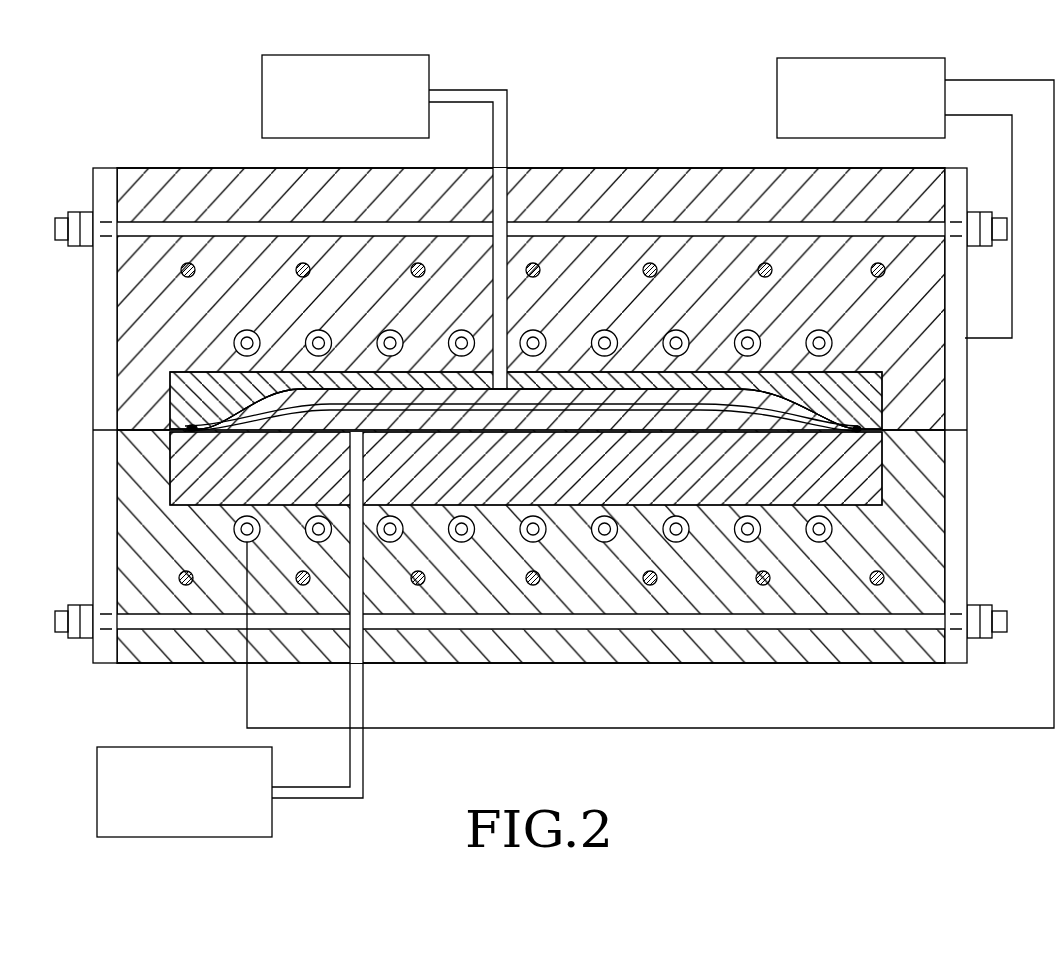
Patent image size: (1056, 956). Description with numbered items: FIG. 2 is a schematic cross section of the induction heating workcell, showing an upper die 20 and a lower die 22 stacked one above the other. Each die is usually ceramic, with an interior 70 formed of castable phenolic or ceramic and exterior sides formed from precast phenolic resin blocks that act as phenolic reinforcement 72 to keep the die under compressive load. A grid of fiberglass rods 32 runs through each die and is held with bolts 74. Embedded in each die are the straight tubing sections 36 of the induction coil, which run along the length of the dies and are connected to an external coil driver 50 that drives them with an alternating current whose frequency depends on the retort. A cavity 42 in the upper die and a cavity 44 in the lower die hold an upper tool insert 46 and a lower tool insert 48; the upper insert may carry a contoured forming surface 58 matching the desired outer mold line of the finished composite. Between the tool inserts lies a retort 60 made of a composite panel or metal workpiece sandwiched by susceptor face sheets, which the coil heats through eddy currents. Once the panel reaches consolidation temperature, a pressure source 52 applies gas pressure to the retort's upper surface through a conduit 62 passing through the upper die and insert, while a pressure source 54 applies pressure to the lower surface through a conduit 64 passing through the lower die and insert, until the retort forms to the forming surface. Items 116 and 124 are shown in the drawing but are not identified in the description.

The upper die 20 is at (608, 152).
The lower die 22 is at (855, 680).
The fiberglass rods 32 is at (163, 215).
The straight tubing section 36 is at (247, 330).
The cavity 42 is at (883, 383).
The cavity 44 is at (883, 458).
The upper tool insert 46 is at (190, 387).
The lower tool insert 48 is at (183, 484).
The coil driver 50 is at (777, 98).
The pressure source 52 is at (262, 96).
The pressure source 54 is at (97, 789).
The contoured forming surface 58 is at (853, 408).
The retort 60 is at (830, 432).
The conduit 62 is at (518, 168).
The conduit 64 is at (363, 758).
The interior of the dies 70 is at (197, 168).
The phenolic reinforcement 72 is at (105, 316).
The bolts 74 is at (985, 212).
The workpiece sheet 116 is at (858, 427).
The sheet edge 124 is at (190, 428).